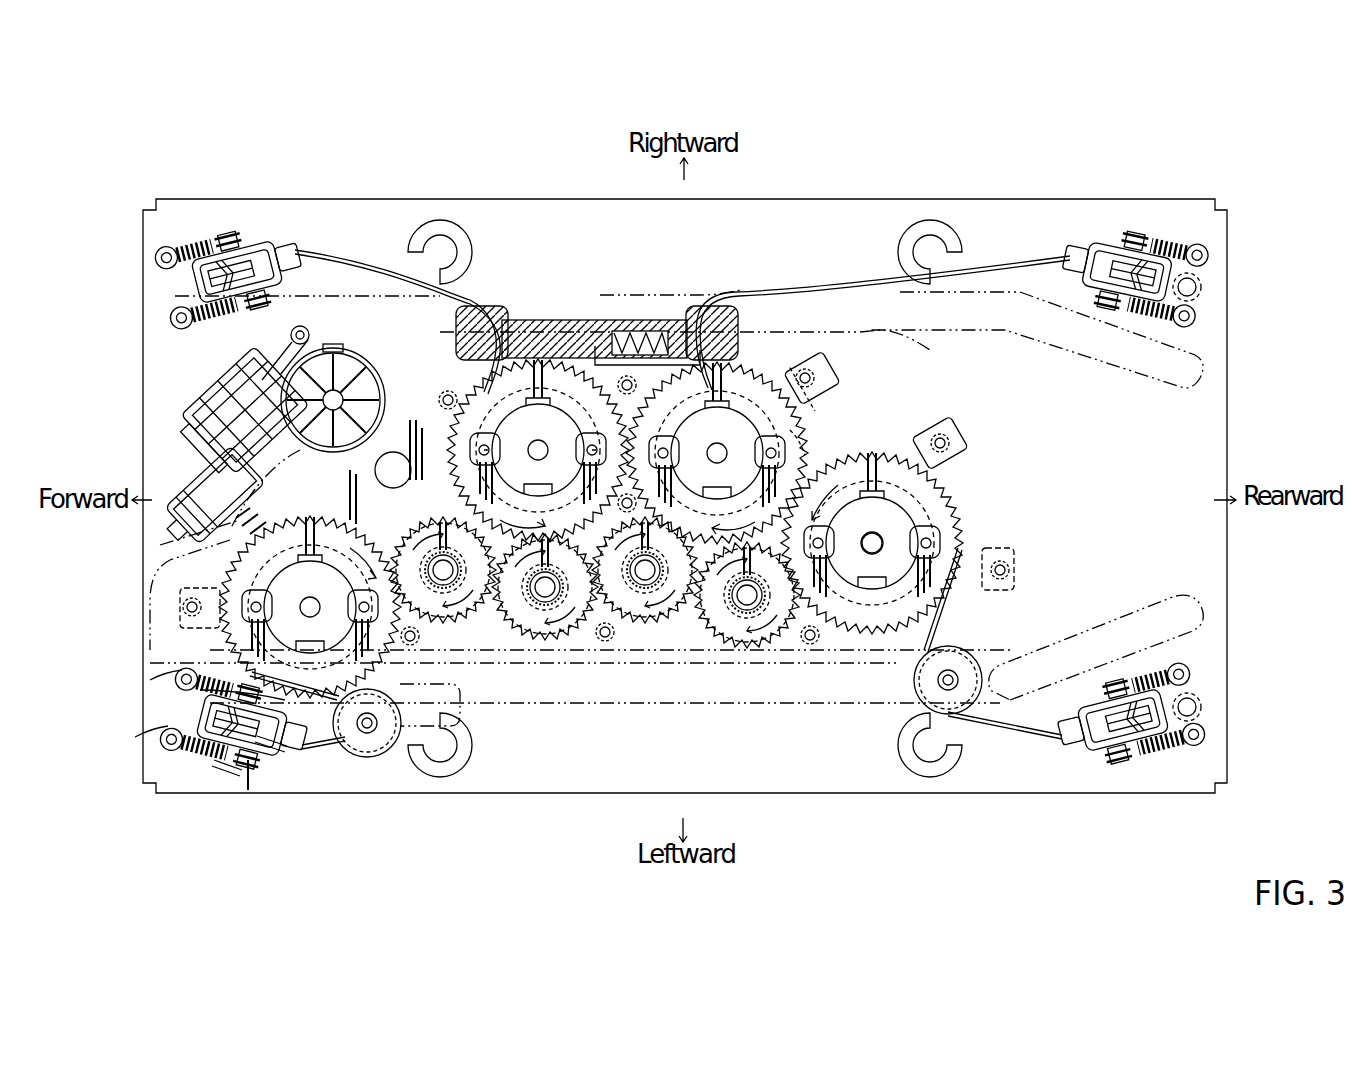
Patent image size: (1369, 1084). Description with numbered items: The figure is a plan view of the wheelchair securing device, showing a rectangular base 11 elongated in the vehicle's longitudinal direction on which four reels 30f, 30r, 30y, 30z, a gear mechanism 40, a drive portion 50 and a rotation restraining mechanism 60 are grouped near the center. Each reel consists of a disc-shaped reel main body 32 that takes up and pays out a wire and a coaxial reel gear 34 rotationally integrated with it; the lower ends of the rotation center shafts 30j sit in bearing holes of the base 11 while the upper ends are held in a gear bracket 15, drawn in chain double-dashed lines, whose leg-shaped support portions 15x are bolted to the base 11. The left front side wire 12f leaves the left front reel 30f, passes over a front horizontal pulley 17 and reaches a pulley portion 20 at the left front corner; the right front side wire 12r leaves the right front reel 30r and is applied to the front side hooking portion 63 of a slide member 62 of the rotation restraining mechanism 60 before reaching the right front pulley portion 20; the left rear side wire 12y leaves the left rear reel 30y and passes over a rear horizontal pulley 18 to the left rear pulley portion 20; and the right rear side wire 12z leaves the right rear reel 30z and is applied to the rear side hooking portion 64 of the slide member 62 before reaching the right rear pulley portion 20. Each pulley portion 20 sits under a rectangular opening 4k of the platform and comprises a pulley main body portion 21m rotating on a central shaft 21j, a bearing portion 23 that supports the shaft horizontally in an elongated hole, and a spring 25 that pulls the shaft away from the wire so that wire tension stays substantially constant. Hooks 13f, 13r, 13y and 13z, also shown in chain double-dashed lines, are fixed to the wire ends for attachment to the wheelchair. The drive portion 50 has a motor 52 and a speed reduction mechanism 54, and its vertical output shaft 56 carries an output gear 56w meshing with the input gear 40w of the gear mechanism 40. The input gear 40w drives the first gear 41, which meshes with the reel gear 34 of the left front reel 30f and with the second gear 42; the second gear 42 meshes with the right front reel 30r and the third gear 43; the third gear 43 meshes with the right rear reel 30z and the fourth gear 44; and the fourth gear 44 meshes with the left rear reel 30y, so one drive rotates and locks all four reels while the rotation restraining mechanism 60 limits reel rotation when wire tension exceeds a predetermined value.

The base 11 is at (178, 222).
The gear bracket 15 is at (847, 452).
The support portion 15x is at (822, 362).
The pulley portion 20 is at (234, 214).
The rectangular opening 4k is at (292, 236).
The right front side wire 12r is at (344, 250).
The right rear side wire 12z is at (990, 255).
The left front side wire 12f is at (336, 745).
The left rear side wire 12y is at (1022, 735).
The hook 13r is at (428, 222).
The hook 13z is at (940, 222).
The hook 13f is at (470, 778).
The hook 13y is at (924, 778).
The rotation restraining mechanism 60 is at (597, 294).
The slide member 62 is at (550, 318).
The front side hooking portion 63 is at (480, 330).
The rear side hooking portion 64 is at (714, 318).
The right front reel 30r is at (470, 388).
The right rear reel 30z is at (770, 402).
The left front reel 30f is at (236, 640).
The left rear reel 30y is at (955, 502).
The rotation center shaft 30j is at (874, 556).
The reel gear 34 is at (418, 395).
The reel main body 32 is at (412, 418).
The gear mechanism 40 is at (822, 441).
The input gear 40w is at (236, 520).
The first gear 41 is at (432, 618).
The second gear 42 is at (546, 640).
The third gear 43 is at (640, 622).
The fourth gear 44 is at (746, 648).
The front horizontal pulley 17 is at (380, 752).
The rear horizontal pulley 18 is at (962, 660).
The drive portion 50 is at (244, 420).
The motor 52 is at (208, 485).
The speed reduction mechanism 54 is at (232, 388).
The output shaft 56 is at (323, 369).
The output gear 56w is at (304, 358).
The bearing portion 23 is at (272, 706).
The spring 25 is at (178, 690).
The central shaft 21j is at (222, 770).
The pulley main body portion 21m is at (266, 752).